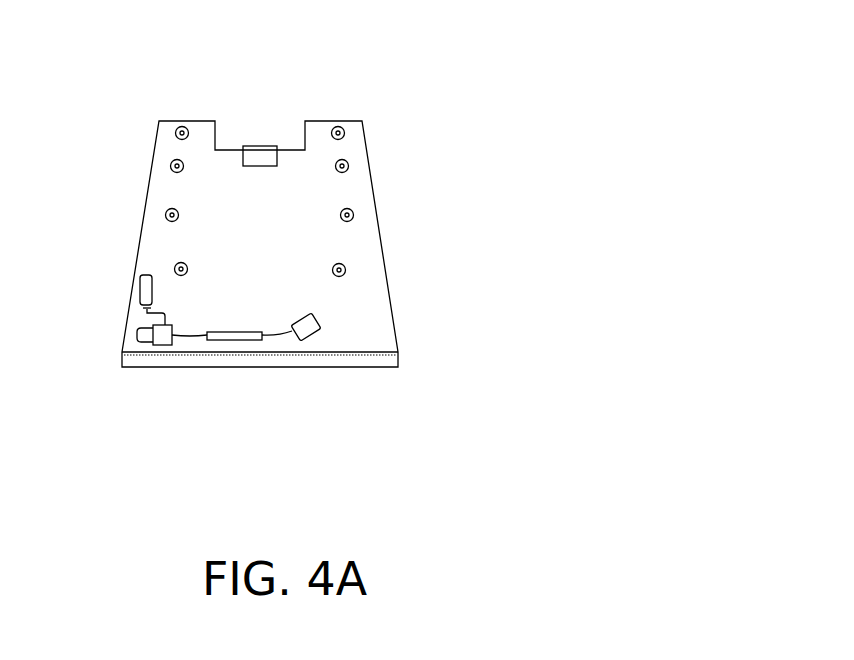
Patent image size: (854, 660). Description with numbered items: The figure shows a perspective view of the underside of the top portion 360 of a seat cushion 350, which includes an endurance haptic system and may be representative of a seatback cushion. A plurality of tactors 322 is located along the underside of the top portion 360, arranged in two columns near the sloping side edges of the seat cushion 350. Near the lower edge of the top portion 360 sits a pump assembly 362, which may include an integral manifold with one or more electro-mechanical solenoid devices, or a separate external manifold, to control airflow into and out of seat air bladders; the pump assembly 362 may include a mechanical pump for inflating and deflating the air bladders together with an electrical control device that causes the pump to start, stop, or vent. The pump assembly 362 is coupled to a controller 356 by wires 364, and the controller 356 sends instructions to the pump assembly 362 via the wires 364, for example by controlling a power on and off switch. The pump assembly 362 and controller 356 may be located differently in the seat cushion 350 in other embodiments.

The seat cushion 350 is at (419, 64).
The top portion 360 is at (362, 243).
The tactors 322 is at (353, 213).
The pump assembly 362 is at (160, 332).
The wires 364 is at (230, 340).
The controller 356 is at (305, 326).